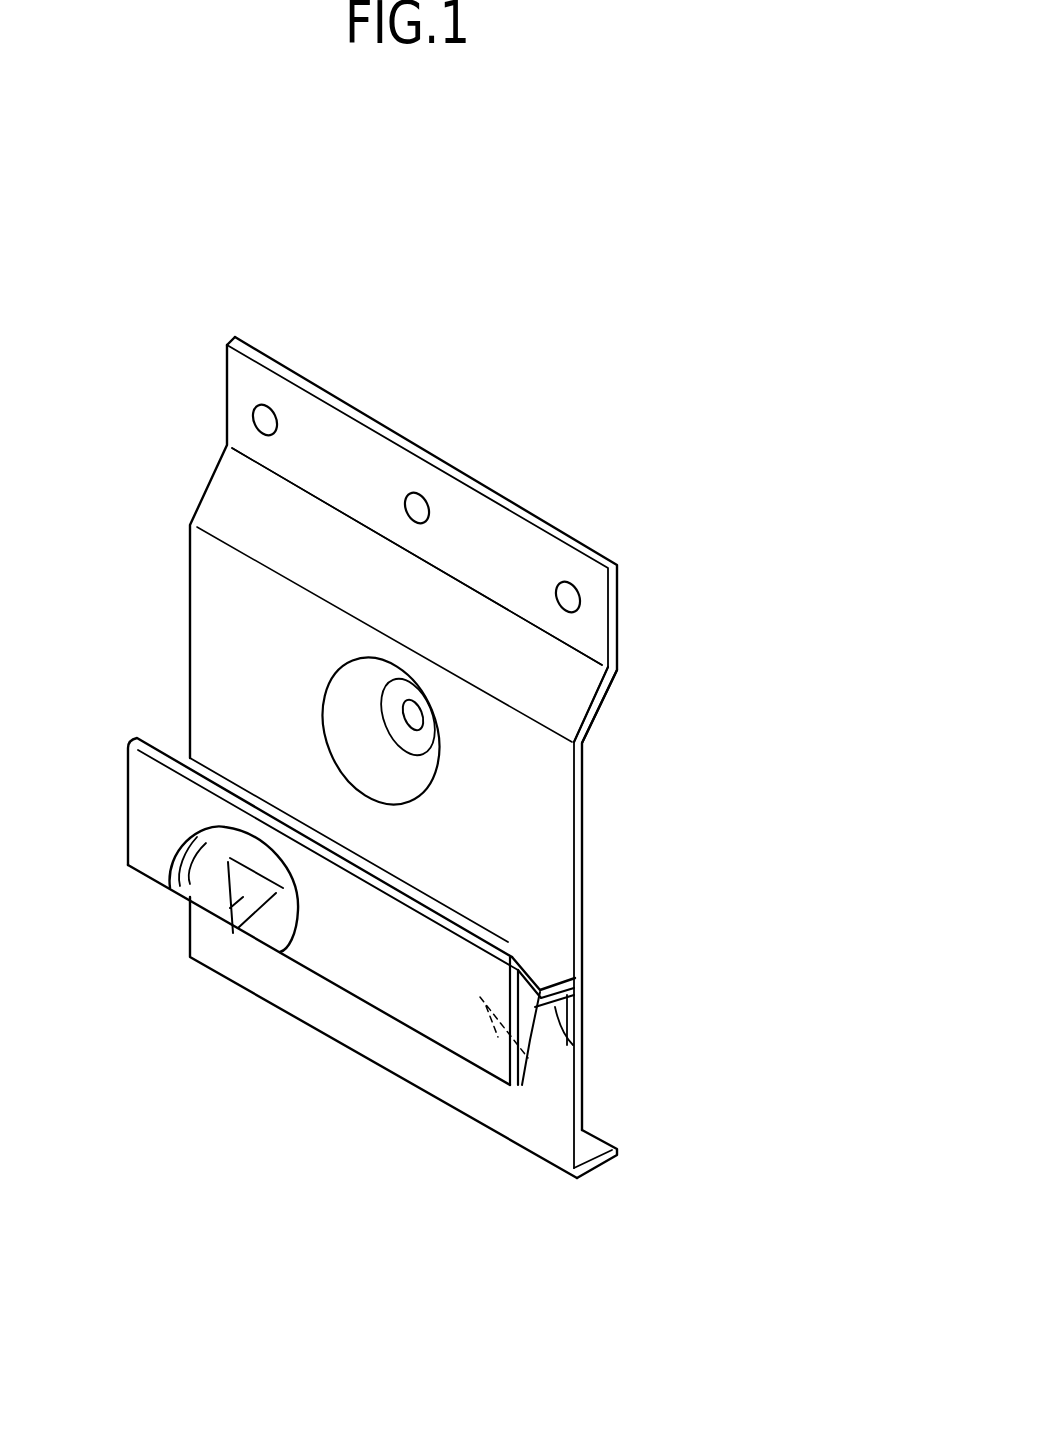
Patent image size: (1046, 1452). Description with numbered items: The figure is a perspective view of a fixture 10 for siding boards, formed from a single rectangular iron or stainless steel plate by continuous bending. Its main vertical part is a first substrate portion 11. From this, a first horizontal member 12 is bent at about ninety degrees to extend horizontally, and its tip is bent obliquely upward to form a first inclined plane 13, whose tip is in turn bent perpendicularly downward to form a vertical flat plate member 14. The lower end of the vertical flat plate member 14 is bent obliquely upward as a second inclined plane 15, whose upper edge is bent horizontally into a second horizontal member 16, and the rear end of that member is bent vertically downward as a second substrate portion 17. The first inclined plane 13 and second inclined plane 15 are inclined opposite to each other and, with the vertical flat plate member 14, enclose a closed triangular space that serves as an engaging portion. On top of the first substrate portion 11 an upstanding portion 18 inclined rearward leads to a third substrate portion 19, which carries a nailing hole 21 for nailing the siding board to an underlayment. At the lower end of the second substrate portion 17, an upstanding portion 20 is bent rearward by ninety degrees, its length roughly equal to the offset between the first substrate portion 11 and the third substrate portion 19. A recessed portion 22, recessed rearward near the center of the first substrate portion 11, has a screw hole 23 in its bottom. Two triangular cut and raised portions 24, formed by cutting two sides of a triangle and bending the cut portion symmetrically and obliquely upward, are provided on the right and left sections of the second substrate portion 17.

The fixture 10 is at (732, 364).
The first substrate portion 11 is at (540, 837).
The first horizontal member 12 is at (532, 960).
The first inclined plane 13 is at (555, 966).
The vertical flat plate member 14 is at (365, 960).
The second inclined plane 15 is at (546, 1040).
The second horizontal member 16 is at (556, 1008).
The second substrate portion 17 is at (400, 1060).
The upstanding portion 18 is at (573, 692).
The third substrate portion 19 is at (600, 604).
The upstanding portion 20 is at (605, 1155).
The nailing hole 21 is at (420, 497).
The recessed portion 22 is at (340, 720).
The screw hole 23 is at (415, 712).
The triangular cut and raised portions 24 is at (243, 897).